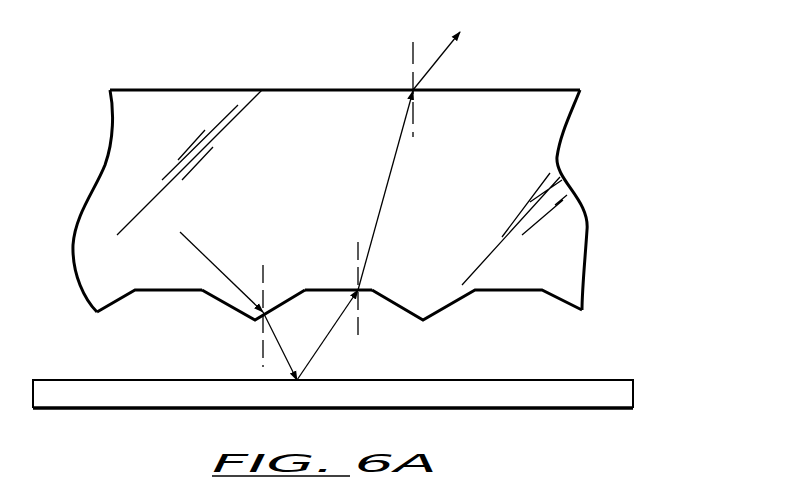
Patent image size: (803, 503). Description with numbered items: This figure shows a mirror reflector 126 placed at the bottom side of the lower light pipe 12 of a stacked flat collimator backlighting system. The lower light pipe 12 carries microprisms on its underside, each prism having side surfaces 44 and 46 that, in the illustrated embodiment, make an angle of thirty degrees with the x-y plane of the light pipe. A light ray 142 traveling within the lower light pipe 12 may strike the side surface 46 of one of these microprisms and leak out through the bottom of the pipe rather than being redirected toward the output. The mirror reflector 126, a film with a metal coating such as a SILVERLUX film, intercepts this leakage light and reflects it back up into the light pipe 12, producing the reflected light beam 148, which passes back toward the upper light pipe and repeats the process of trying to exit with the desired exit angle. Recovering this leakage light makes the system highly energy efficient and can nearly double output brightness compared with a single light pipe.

The lower light pipe 12 is at (600, 152).
The side surface of prism 44 is at (223, 302).
The side surface of prism 46 is at (288, 303).
The incident light ray 142 is at (203, 253).
The reflected light beam 148 is at (392, 165).
The mirror reflector 126 is at (533, 395).